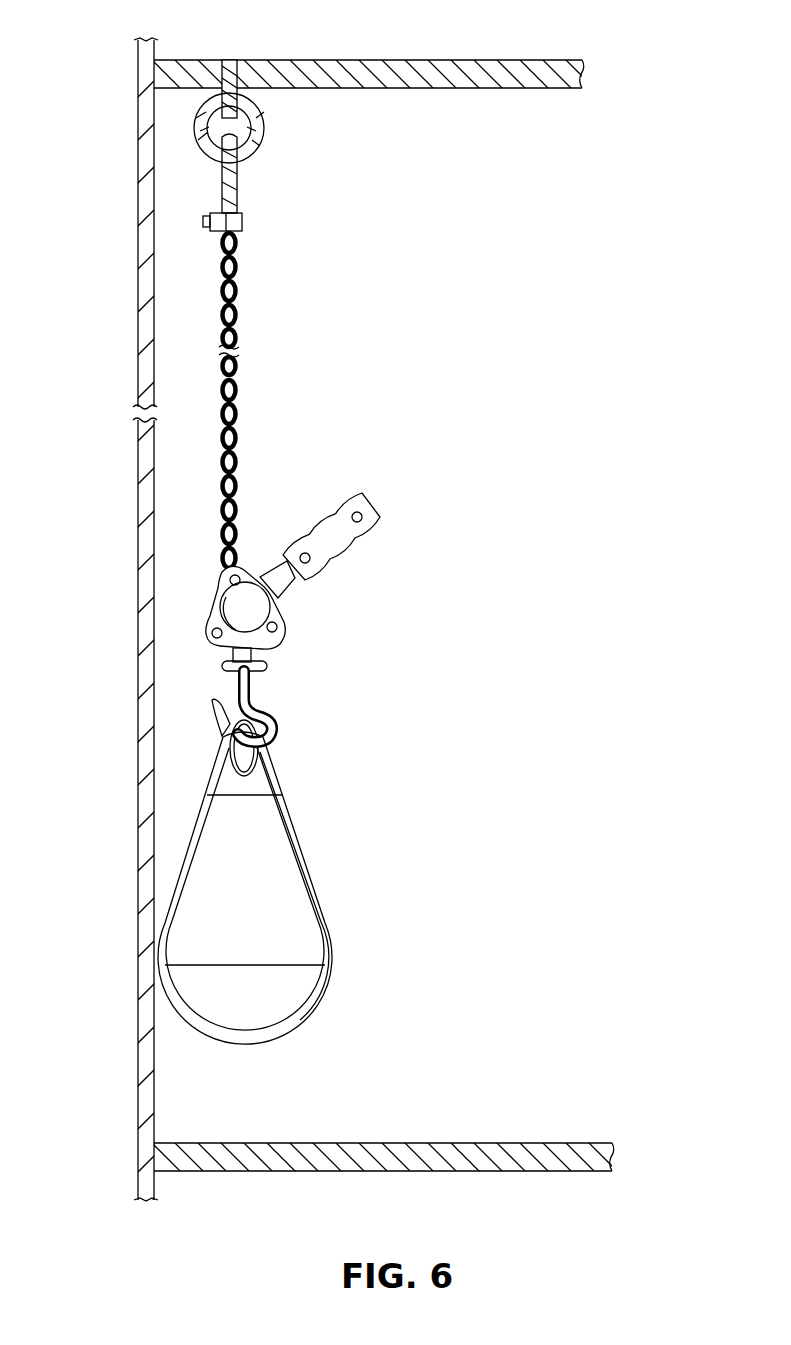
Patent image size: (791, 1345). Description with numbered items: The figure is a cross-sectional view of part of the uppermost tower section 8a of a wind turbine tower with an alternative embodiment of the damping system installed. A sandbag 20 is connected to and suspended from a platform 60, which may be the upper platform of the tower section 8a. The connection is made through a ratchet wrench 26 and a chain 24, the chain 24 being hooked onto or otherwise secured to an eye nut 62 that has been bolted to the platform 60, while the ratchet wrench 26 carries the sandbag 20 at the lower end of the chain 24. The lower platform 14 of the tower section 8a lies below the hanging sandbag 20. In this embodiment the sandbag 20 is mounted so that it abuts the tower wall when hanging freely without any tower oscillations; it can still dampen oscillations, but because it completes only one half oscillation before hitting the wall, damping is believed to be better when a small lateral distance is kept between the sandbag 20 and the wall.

The uppermost tower section 8a is at (137, 158).
The platform 60 is at (303, 60).
The eye nut 62 is at (265, 130).
The chain 24 is at (236, 290).
The ratchet wrench 26 is at (283, 625).
The sandbag 20 is at (296, 822).
The lower platform 14 is at (512, 1172).